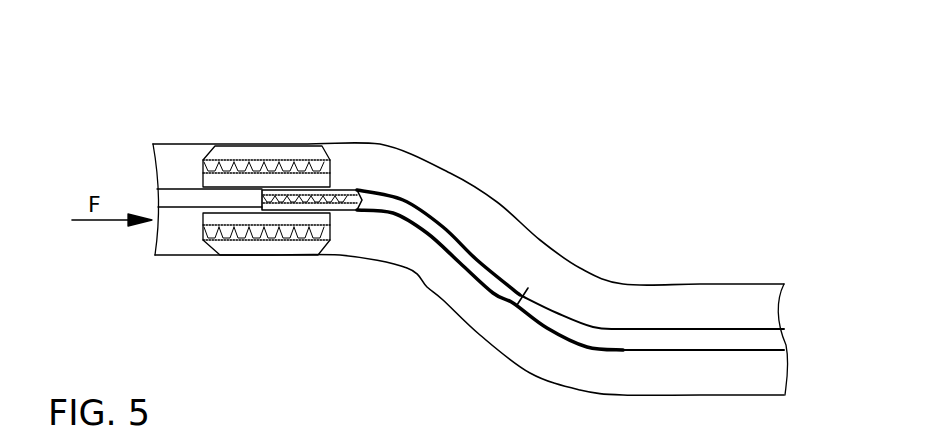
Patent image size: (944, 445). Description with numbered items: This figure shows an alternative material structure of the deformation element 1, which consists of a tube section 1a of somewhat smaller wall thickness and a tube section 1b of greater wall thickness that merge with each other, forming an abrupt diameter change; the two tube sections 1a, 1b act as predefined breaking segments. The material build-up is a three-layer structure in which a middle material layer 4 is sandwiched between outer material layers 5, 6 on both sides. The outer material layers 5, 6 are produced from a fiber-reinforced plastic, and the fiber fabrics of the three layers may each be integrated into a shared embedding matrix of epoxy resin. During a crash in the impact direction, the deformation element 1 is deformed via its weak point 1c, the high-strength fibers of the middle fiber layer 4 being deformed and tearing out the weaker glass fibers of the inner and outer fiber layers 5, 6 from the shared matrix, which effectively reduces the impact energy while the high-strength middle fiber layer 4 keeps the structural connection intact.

The deformation element 1 is at (620, 147).
The tube section 1a is at (192, 147).
The tube section 1b is at (753, 288).
The weak point 1c is at (497, 203).
The material layer 4 is at (567, 312).
The outer material layer 5 is at (382, 156).
The outer material layer 6 is at (350, 240).